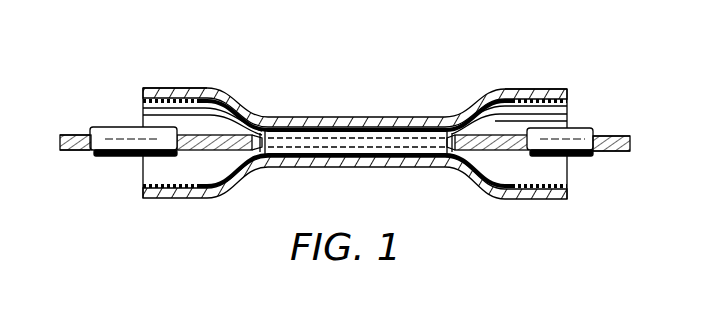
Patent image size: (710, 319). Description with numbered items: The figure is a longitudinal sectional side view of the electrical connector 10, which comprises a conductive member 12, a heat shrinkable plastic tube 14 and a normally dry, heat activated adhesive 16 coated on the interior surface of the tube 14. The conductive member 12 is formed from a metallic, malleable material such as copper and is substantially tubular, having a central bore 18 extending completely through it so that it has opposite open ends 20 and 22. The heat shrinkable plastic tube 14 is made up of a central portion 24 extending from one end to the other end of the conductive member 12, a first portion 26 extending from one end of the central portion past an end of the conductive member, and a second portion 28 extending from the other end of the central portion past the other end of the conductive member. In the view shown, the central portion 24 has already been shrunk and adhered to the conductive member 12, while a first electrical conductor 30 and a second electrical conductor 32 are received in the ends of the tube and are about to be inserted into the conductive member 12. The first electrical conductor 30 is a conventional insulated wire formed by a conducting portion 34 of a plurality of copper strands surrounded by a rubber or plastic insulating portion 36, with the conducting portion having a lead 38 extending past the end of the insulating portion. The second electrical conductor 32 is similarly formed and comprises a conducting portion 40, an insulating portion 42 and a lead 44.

The electrical connector 10 is at (424, 86).
The conductive member 12 is at (298, 122).
The heat shrinkable plastic tube 14 is at (358, 93).
The heat activated adhesive 16 is at (389, 122).
The central bore 18 is at (388, 148).
The open end 20 is at (425, 152).
The open end 22 is at (272, 149).
The central portion 24 is at (336, 117).
The first portion 26 is at (484, 89).
The second portion 28 is at (216, 88).
The first electrical conductor 30 is at (577, 107).
The second electrical conductor 32 is at (120, 119).
The conducting portion 34 is at (620, 137).
The insulating portion 36 is at (583, 131).
The lead 38 is at (521, 150).
The conducting portion 40 is at (72, 136).
The insulating portion 42 is at (133, 127).
The lead 44 is at (215, 135).